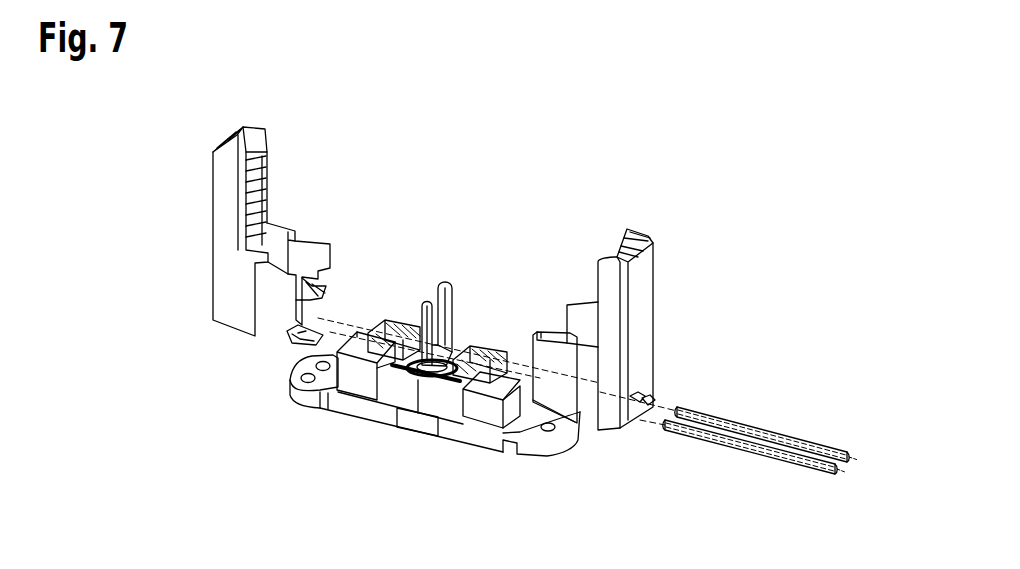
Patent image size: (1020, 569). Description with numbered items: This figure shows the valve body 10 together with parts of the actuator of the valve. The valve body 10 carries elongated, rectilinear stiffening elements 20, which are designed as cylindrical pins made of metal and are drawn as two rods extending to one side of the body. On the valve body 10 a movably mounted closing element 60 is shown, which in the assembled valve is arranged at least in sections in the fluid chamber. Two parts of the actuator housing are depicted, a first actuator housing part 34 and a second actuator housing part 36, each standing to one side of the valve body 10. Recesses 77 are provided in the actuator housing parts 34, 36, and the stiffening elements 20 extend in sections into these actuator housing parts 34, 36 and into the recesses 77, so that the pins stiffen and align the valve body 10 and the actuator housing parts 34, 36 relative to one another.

The valve body 10 is at (388, 396).
The stiffening elements 20 is at (777, 448).
The first actuator housing part 34 is at (227, 210).
The second actuator housing part 36 is at (640, 300).
The closing element 60 is at (427, 300).
The recesses 77 is at (633, 407).